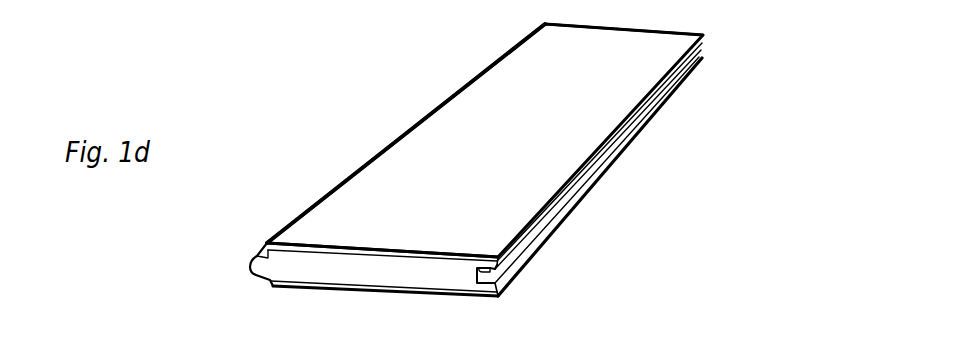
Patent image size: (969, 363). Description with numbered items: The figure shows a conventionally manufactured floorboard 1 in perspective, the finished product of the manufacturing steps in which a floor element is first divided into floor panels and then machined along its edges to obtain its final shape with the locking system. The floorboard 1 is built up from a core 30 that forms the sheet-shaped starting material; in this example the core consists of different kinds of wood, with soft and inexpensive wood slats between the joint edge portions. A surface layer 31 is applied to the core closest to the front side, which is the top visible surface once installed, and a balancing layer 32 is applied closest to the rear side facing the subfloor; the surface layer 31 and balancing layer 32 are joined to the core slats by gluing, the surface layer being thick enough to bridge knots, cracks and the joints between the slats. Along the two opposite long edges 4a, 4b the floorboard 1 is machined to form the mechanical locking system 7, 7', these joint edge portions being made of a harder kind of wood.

The floorboard 1 is at (423, 141).
The long edge 4a is at (387, 134).
The long edge 4b is at (628, 160).
The mechanical locking system 7 is at (225, 255).
The mechanical locking system 7' is at (548, 270).
The core 30 is at (385, 278).
The surface layer 31 is at (707, 37).
The balancing layer 32 is at (325, 290).